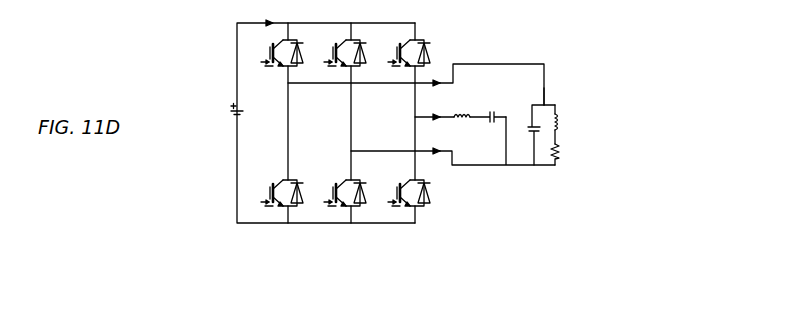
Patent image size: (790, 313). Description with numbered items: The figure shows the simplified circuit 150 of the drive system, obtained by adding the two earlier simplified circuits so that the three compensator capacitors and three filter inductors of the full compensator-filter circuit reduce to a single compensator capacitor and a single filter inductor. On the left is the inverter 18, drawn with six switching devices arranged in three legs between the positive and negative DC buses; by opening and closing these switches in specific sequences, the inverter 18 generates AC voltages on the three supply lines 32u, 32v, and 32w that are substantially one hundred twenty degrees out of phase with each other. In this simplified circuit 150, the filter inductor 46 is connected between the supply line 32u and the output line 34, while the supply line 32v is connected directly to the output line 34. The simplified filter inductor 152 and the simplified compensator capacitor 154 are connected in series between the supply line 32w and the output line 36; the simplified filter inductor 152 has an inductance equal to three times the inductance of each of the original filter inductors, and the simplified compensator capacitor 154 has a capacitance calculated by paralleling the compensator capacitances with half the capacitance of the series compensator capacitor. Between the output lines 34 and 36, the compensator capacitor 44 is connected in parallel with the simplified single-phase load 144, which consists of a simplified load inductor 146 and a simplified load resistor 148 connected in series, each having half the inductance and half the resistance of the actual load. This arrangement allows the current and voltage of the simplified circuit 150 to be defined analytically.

The inverter 18 is at (430, 224).
The supply line 32u is at (372, 87).
The supply line 32v is at (462, 167).
The supply line 32w is at (424, 113).
The output line 34 is at (545, 93).
The output line 36 is at (507, 167).
The compensator capacitor 44 is at (539, 134).
The filter inductor 46 is at (545, 74).
The simplified single-phase load 144 is at (620, 158).
The simplified load inductor 146 is at (557, 128).
The simplified load resistor 148 is at (557, 163).
The simplified circuit 150 is at (700, 11).
The simplified filter inductor 152 is at (456, 112).
The simplified compensator capacitor 154 is at (492, 121).